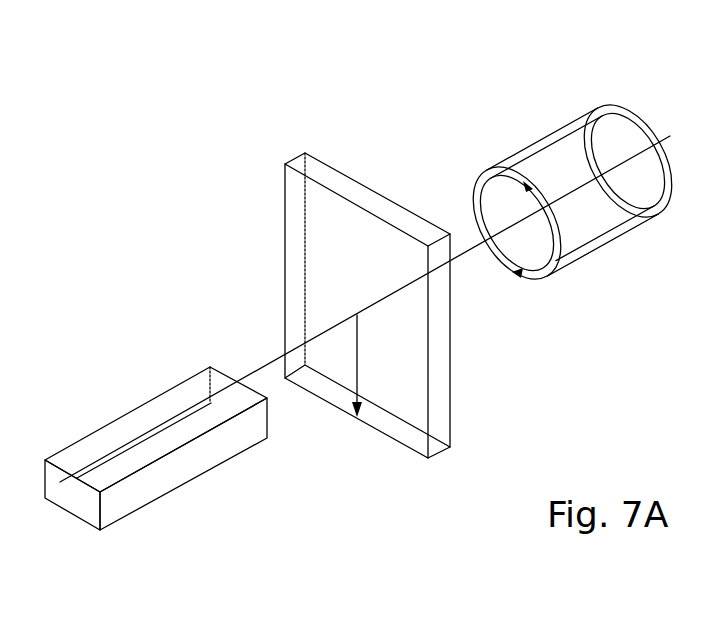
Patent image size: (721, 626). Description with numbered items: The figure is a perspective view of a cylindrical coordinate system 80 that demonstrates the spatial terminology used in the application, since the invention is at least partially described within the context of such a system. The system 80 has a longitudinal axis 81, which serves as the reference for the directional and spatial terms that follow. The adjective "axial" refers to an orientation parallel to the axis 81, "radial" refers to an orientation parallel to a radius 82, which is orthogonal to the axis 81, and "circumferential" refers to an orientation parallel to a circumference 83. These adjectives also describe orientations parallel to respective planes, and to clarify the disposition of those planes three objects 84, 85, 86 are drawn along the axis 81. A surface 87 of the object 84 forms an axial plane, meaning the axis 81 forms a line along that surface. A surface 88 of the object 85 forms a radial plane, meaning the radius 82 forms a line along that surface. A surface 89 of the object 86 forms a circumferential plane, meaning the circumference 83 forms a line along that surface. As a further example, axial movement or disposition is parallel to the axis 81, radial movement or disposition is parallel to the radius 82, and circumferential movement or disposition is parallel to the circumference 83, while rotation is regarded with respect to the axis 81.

The cylindrical coordinate system 80 is at (244, 201).
The longitudinal axis 81 is at (541, 191).
The radius 82 is at (357, 360).
The circumference 83 is at (472, 190).
The object 84 is at (156, 473).
The object 85 is at (462, 455).
The object 86 is at (604, 260).
The surface 87 is at (121, 432).
The surface 88 is at (367, 323).
The surface 89 is at (542, 140).